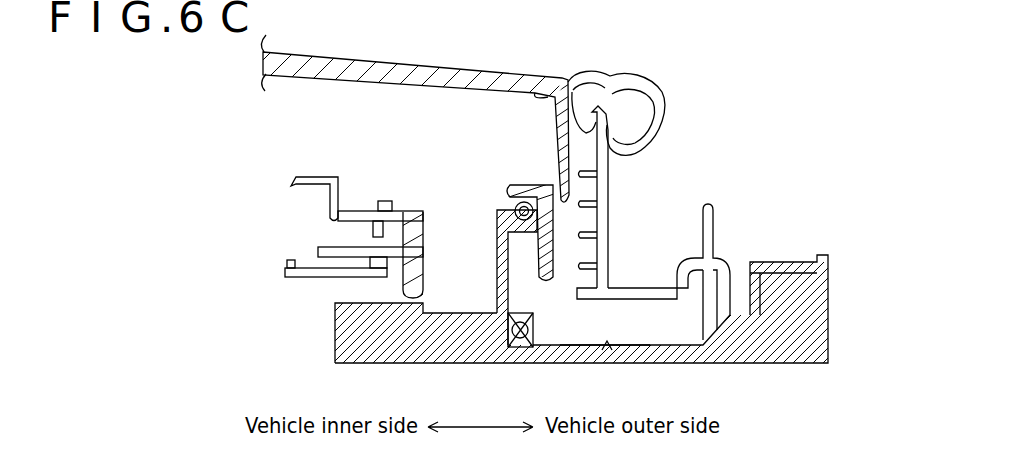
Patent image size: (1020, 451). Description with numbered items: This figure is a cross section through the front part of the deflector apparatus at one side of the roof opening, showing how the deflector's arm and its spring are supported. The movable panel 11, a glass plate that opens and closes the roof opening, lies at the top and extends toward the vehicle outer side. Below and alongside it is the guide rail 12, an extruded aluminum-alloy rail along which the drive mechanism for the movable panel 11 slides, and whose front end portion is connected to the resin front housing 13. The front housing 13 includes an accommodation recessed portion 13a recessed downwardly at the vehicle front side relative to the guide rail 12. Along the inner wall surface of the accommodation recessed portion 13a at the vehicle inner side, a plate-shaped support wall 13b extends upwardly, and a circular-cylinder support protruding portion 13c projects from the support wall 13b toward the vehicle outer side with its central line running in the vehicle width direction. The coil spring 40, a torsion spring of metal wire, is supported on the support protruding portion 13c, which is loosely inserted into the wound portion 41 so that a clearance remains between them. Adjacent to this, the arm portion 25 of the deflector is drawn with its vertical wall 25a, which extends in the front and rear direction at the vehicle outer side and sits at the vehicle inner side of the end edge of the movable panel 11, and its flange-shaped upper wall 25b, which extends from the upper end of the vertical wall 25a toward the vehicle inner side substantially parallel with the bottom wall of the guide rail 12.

The movable panel 11 is at (296, 53).
The guide rail 12 is at (660, 302).
The front housing 13 is at (680, 366).
The accommodation recessed portion 13a is at (607, 352).
The support wall 13b is at (494, 274).
The support protruding portion 13c is at (518, 350).
The arm portion 25 is at (609, 179).
The vertical wall 25a is at (557, 248).
The upper wall 25b is at (525, 185).
The coil spring 40 is at (461, 190).
The wound portion 41 is at (514, 206).